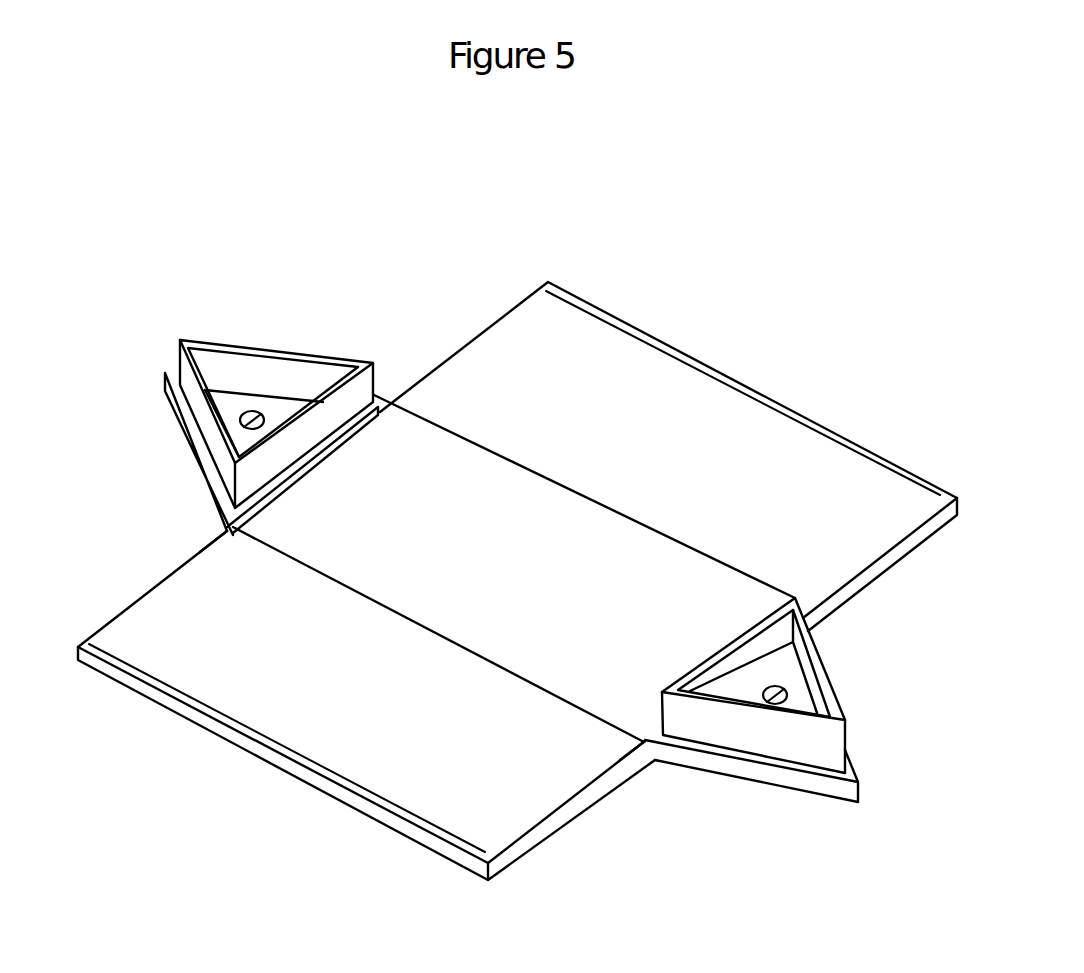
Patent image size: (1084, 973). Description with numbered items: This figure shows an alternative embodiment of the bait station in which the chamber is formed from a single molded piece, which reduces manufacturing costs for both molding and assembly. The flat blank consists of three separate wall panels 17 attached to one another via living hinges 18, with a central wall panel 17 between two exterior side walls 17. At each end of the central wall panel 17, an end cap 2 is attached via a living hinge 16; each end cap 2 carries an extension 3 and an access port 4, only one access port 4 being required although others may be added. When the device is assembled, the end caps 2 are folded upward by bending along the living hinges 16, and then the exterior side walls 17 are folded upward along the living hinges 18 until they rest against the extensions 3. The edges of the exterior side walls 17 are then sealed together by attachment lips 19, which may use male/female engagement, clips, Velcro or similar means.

The end cap 2 is at (193, 452).
The extension 3 is at (177, 363).
The access port 4 is at (250, 413).
The living hinge 16 is at (320, 457).
The wall panel 17 is at (692, 523).
The living hinge 18 is at (426, 424).
The attachment lip 19 is at (711, 381).